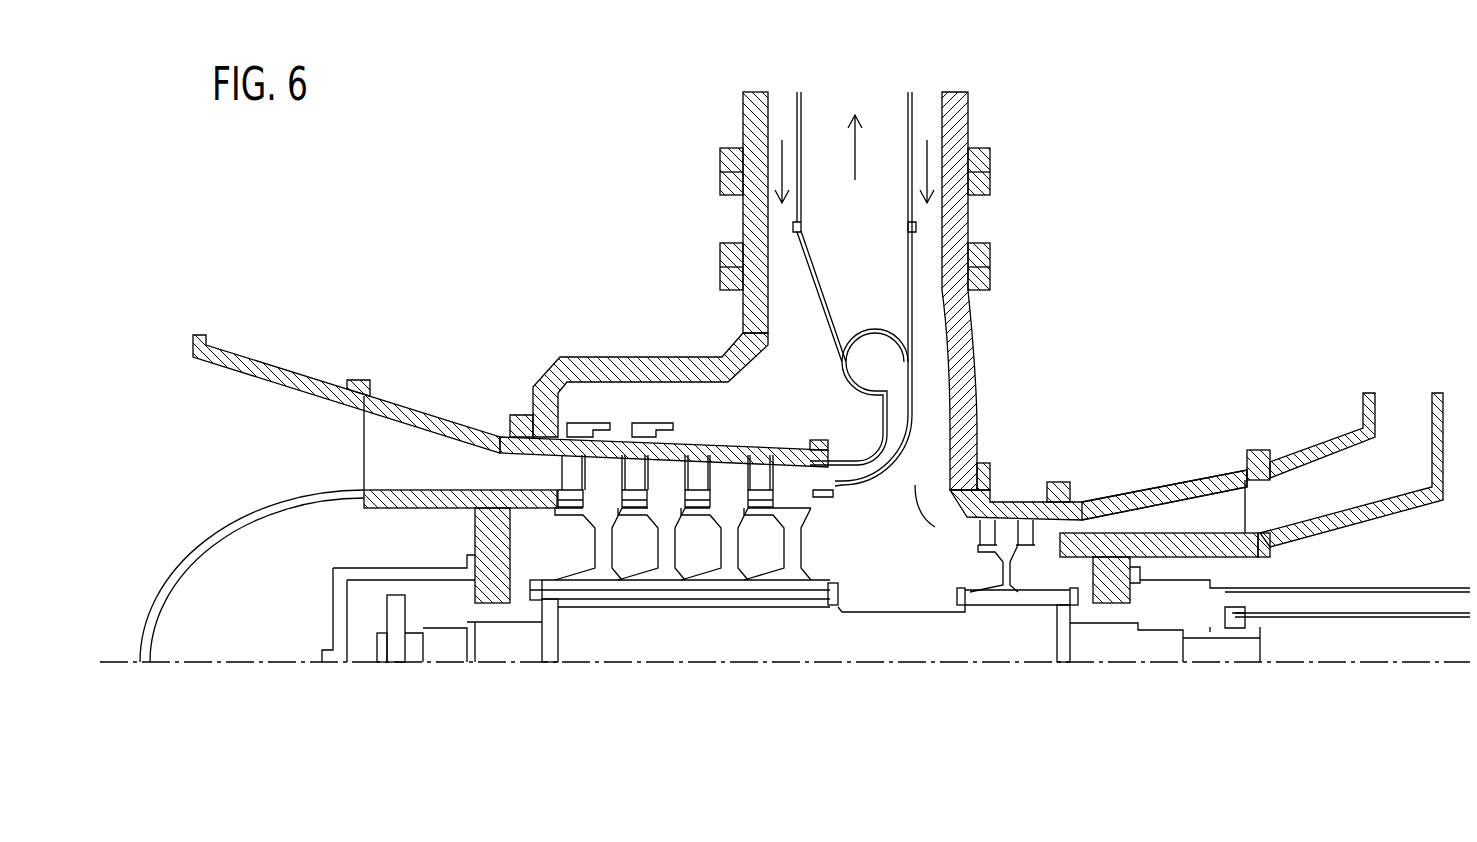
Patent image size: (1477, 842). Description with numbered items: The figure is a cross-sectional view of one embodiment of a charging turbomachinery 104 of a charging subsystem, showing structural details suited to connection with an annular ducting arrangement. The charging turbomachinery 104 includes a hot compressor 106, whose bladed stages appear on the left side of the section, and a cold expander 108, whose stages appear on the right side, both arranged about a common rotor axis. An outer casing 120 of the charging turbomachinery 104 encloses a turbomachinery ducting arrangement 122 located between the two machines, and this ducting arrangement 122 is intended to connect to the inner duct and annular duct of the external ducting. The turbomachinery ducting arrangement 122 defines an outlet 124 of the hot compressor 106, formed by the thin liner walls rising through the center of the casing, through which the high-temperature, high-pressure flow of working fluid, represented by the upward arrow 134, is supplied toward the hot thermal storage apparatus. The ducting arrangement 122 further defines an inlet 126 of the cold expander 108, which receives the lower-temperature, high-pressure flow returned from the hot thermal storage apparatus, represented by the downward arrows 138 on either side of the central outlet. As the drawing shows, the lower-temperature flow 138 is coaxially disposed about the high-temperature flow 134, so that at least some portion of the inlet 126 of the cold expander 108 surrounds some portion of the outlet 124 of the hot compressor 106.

The charging turbomachinery 104 is at (732, 710).
The hot compressor 106 is at (599, 313).
The cold expander 108 is at (1211, 426).
The outer casing 120 is at (745, 328).
The turbomachinery ducting arrangement 122 is at (676, 108).
The outlet of hot compressor 124 is at (803, 105).
The inlet of cold expander 126 is at (925, 525).
The high-temperature, high-pressure flow 134 is at (857, 148).
The lower-temperature, high-pressure flow 138 is at (785, 162).